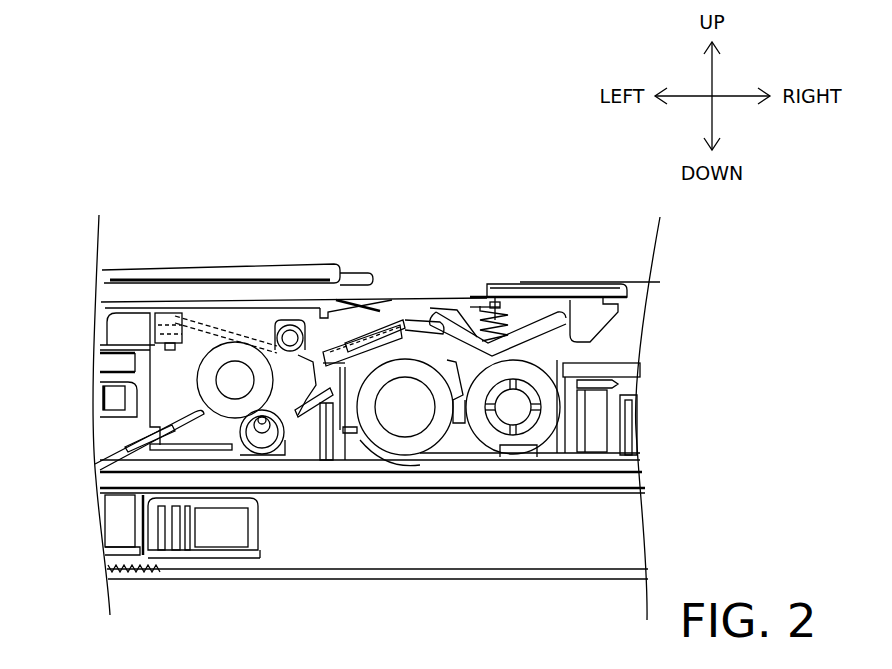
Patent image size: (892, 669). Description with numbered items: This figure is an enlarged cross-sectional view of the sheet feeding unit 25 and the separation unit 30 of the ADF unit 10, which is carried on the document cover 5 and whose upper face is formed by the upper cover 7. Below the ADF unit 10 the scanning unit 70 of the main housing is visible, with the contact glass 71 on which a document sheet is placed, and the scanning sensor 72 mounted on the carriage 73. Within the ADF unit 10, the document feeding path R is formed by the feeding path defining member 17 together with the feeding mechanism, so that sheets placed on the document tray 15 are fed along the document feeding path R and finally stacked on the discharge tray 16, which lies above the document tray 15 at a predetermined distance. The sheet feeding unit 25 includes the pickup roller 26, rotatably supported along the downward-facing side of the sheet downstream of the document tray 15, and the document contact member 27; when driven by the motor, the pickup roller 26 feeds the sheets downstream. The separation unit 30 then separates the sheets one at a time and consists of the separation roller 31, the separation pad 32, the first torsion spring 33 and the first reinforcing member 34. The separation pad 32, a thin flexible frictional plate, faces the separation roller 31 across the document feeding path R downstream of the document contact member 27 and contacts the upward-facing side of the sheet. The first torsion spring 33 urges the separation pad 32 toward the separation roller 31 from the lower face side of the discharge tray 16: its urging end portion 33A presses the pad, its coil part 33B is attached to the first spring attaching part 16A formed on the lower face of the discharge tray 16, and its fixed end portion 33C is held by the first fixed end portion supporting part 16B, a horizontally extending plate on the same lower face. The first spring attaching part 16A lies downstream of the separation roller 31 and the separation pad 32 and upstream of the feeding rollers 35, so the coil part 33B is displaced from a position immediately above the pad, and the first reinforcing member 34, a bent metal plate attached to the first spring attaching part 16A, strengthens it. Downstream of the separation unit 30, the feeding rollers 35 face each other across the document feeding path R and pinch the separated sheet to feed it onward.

The document cover 5 is at (127, 291).
The upper cover 7 is at (133, 268).
The ADF unit 10 is at (467, 202).
The document tray 15 is at (622, 367).
The discharge tray 16 is at (608, 300).
The first spring attaching part 16A is at (299, 358).
The first fixed end portion supporting part 16B is at (162, 310).
The feeding path defining member 17 is at (130, 400).
The sheet feeding unit 25 is at (535, 300).
The pickup roller 26 is at (508, 445).
The document contact member 27 is at (518, 350).
The separation unit 30 is at (455, 425).
The separation roller 31 is at (395, 447).
The separation pad 32 is at (407, 350).
The first torsion spring 33 is at (353, 310).
The urging end portion 33A is at (380, 325).
The coil part 33B is at (305, 400).
The fixed end portion 33C is at (199, 305).
The first reinforcing member 34 is at (283, 314).
The feeding rollers 35 is at (218, 353).
The scanning unit 70 is at (575, 540).
The contact glass 71 is at (613, 482).
The scanning sensor 72 is at (135, 530).
The carriage 73 is at (218, 502).
The document feeding path R is at (167, 448).